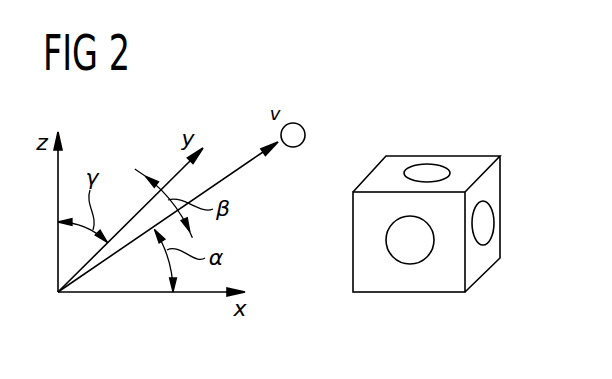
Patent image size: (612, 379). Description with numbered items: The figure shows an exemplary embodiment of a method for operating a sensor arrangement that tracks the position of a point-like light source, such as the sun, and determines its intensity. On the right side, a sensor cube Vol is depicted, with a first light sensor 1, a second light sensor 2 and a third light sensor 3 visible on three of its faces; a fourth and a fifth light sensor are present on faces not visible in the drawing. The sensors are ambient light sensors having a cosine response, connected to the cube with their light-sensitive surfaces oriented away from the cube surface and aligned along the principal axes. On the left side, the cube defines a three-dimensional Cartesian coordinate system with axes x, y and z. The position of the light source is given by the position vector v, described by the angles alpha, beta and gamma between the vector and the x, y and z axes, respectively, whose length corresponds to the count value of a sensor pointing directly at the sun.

The first light sensor 1 is at (408, 252).
The second light sensor 2 is at (483, 222).
The third light sensor 3 is at (427, 173).
The sensor cube Vol is at (488, 270).